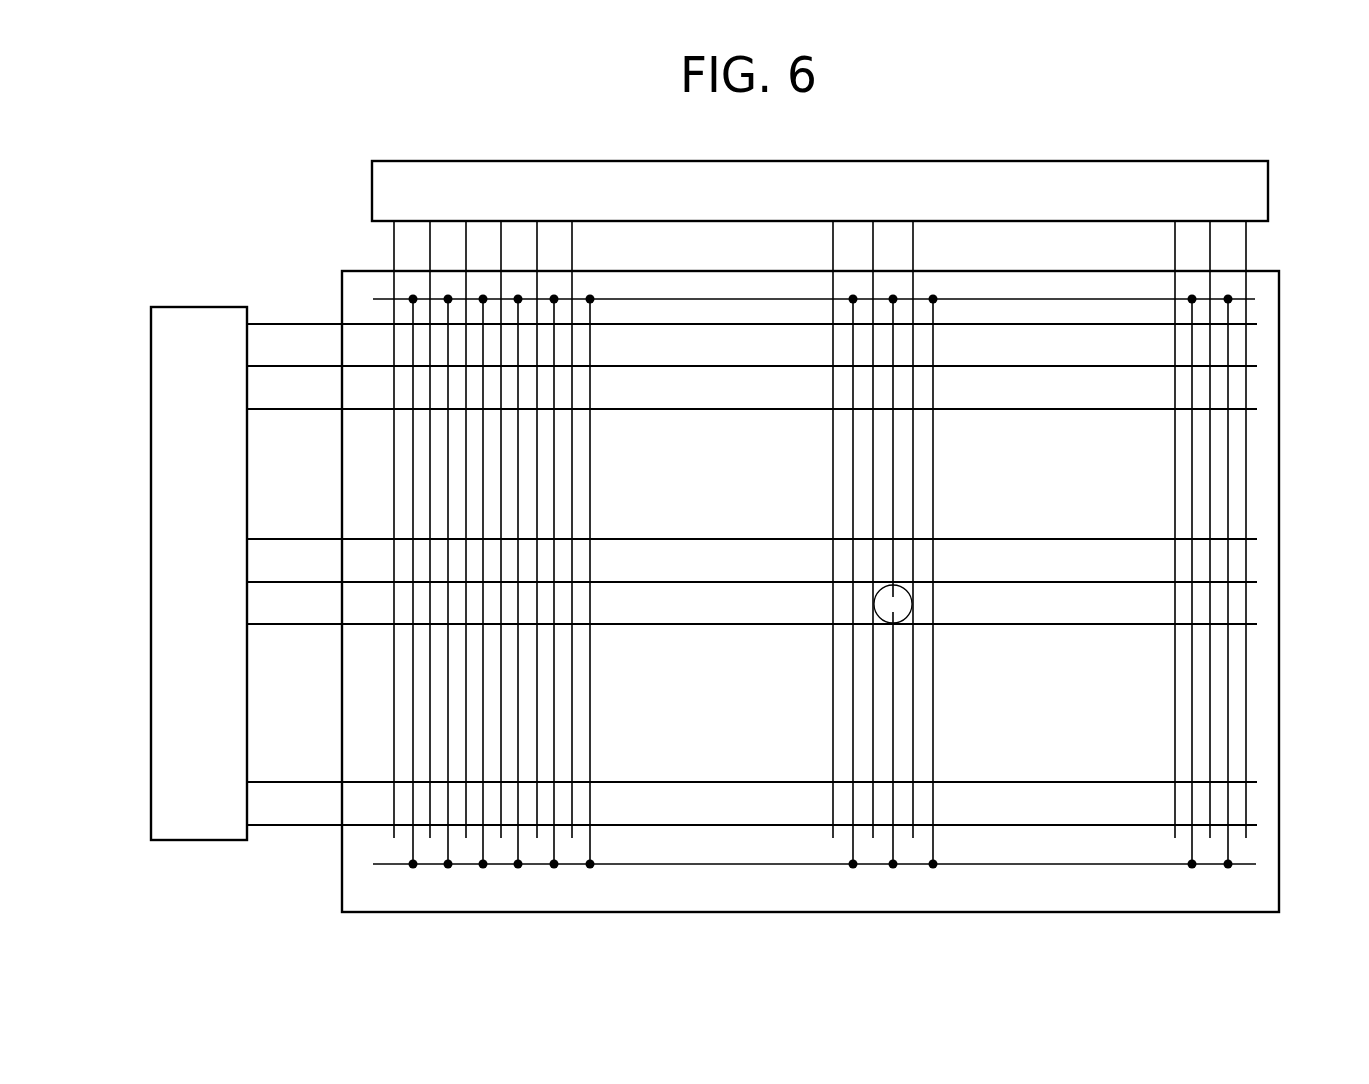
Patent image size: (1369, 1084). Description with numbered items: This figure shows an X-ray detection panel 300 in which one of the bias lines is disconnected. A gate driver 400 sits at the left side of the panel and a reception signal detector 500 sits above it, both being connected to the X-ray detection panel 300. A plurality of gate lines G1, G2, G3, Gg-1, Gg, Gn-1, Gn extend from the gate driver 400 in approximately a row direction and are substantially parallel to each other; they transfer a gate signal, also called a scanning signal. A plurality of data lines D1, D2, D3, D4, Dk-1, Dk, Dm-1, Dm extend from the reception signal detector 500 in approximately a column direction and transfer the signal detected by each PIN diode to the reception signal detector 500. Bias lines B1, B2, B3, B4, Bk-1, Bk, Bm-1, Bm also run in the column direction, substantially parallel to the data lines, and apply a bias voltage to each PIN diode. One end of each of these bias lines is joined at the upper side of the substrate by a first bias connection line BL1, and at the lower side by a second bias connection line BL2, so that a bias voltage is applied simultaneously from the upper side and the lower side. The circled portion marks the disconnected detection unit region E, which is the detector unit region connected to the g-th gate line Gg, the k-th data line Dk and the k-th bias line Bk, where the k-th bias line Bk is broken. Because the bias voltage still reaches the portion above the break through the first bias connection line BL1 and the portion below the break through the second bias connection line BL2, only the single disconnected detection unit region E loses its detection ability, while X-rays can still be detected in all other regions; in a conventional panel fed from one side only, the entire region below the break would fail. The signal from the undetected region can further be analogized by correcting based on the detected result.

The reception signal detector 500 is at (1096, 161).
The gate driver 400 is at (151, 523).
The X-ray detection panel 300 is at (1279, 395).
The first bias connection line BL1 is at (1255, 299).
The second bias connection line BL2 is at (1256, 864).
The disconnected detection unit region E is at (910, 593).
The gate line G1 is at (752, 309).
The gate line G2 is at (752, 351).
The gate line G3 is at (752, 394).
The gate line Gg-1 is at (752, 567).
The g-th gate line Gg is at (752, 609).
The gate line Gn-1 is at (752, 767).
The gate line Gn is at (752, 810).
The data line D1 is at (407, 529).
The data line D2 is at (444, 529).
The data line D3 is at (480, 529).
The data line D4 is at (515, 529).
The data line Dk-1 is at (815, 529).
The k-th data line Dk is at (860, 529).
The data line Dm-1 is at (1191, 529).
The data line Dm is at (1225, 529).
The bias line B1 is at (412, 602).
The bias line B2 is at (447, 602).
The bias line B3 is at (482, 602).
The bias line B4 is at (518, 602).
The bias line Bk-1 is at (851, 602).
The k-th bias line Bk is at (891, 602).
The bias line Bm-1 is at (1186, 603).
The bias line Bm is at (1227, 603).